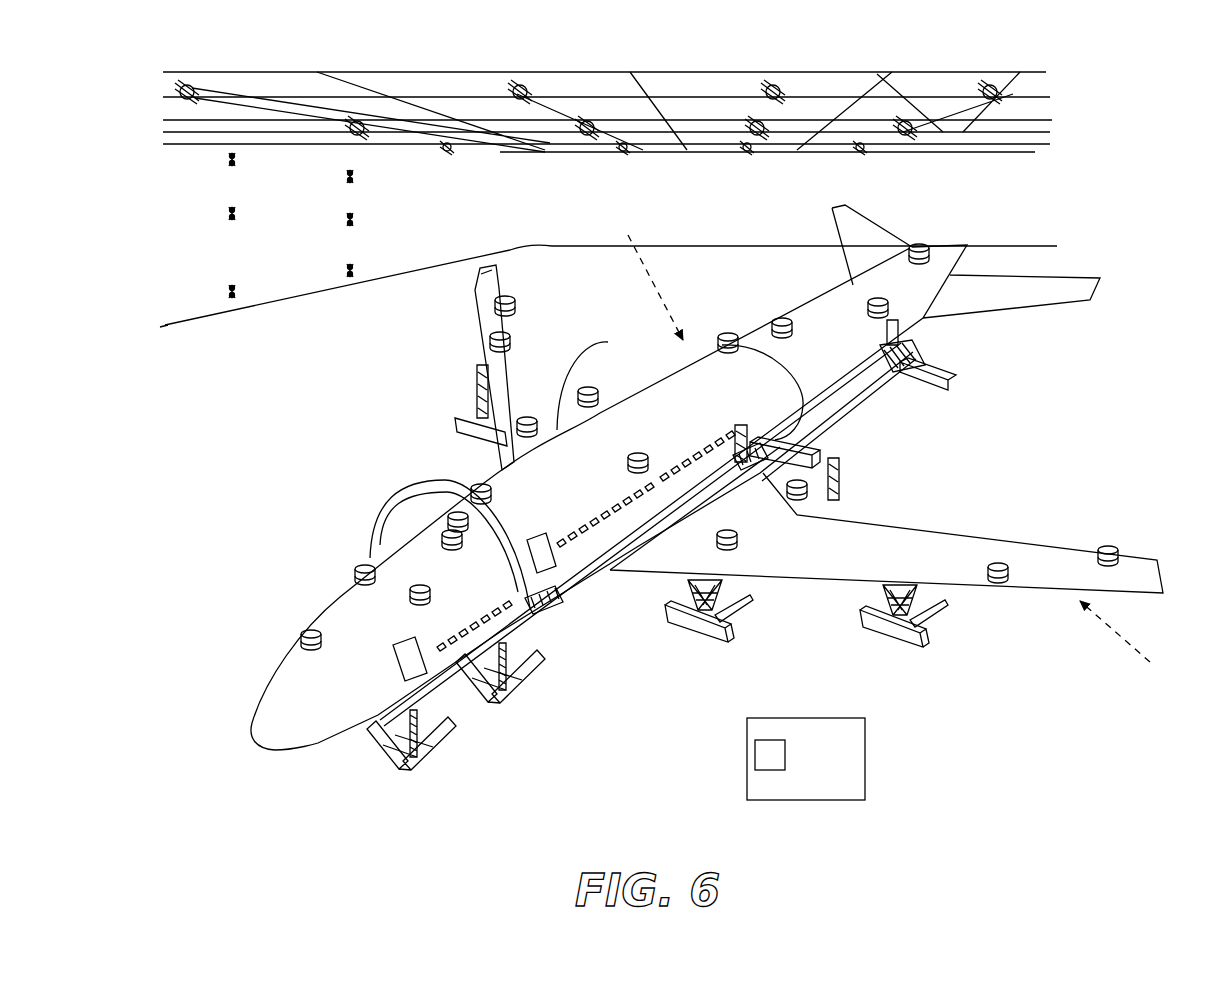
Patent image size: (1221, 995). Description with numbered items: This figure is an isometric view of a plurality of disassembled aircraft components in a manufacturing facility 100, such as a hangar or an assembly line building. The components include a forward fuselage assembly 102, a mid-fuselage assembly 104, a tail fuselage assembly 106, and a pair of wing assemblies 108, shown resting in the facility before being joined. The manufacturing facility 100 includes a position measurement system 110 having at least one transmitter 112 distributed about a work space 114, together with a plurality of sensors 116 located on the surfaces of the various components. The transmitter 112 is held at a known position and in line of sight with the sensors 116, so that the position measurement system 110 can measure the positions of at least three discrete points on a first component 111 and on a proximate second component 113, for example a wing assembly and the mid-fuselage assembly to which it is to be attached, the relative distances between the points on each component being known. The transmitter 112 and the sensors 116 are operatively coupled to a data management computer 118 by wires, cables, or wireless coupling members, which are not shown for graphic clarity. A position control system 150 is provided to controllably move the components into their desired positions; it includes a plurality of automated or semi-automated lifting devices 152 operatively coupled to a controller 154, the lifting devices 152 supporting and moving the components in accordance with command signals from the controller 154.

The manufacturing facility 100 is at (1114, 150).
The forward fuselage assembly 102 is at (347, 737).
The mid-fuselage assembly 104 is at (573, 567).
The tail fuselage assembly 106 is at (970, 290).
The wing assemblies 108 is at (480, 278).
The position measurement system 110 is at (250, 363).
The first component 111 is at (1138, 646).
The transmitter 112 is at (770, 90).
The second component 113 is at (635, 276).
The work space 114 is at (277, 340).
The sensors 116 is at (300, 640).
The data management computer 118 is at (866, 754).
The position control system 150 is at (598, 782).
The lifting devices 152 is at (450, 422).
The controller 154 is at (748, 756).